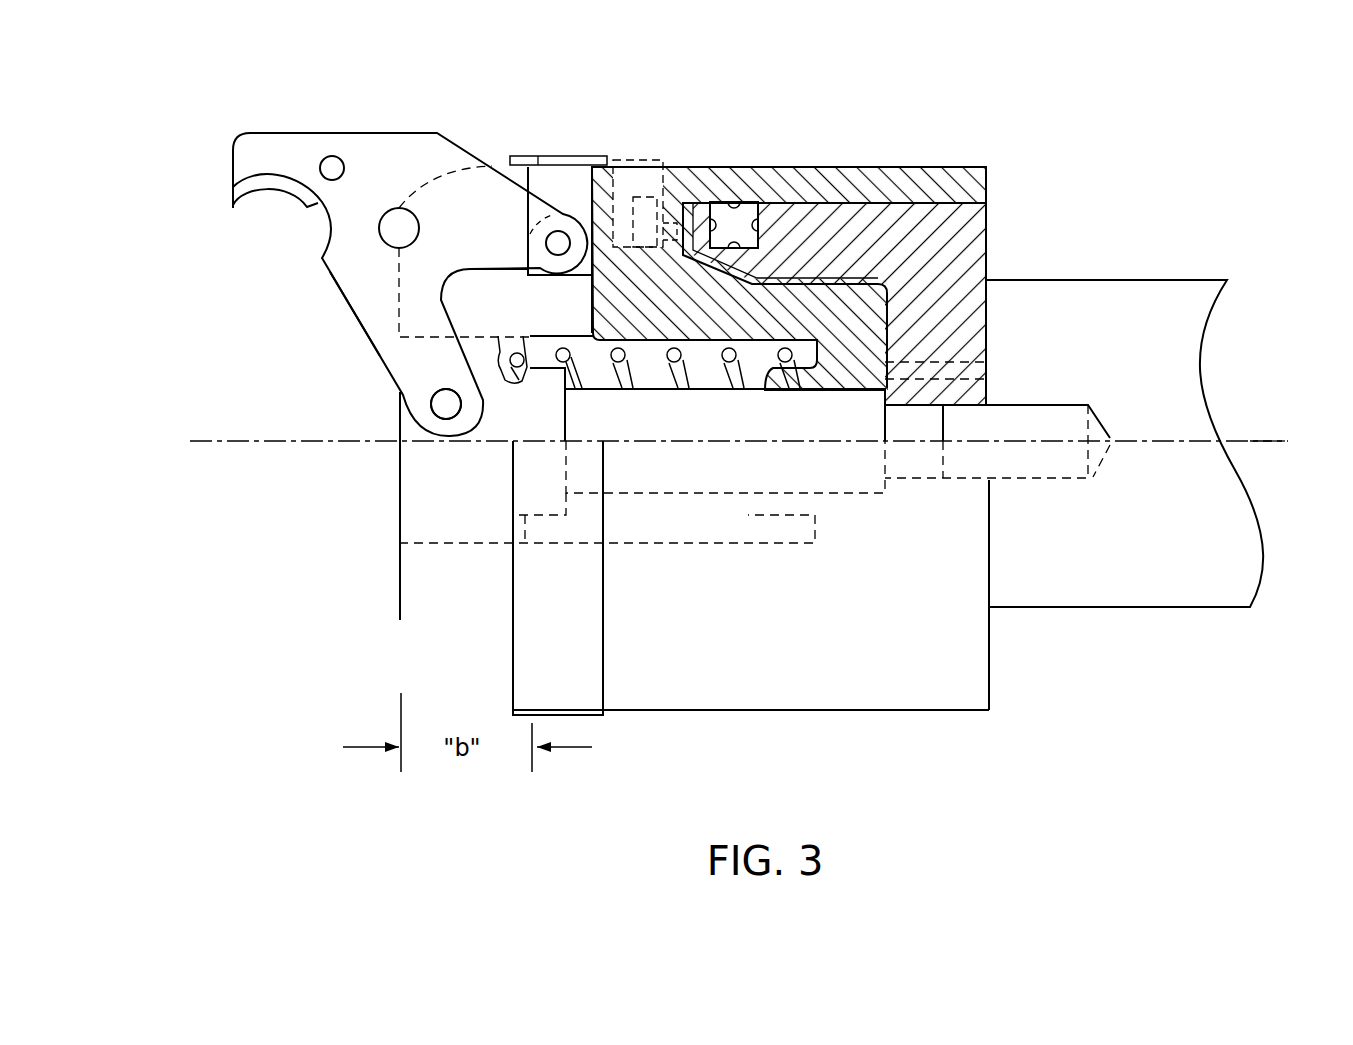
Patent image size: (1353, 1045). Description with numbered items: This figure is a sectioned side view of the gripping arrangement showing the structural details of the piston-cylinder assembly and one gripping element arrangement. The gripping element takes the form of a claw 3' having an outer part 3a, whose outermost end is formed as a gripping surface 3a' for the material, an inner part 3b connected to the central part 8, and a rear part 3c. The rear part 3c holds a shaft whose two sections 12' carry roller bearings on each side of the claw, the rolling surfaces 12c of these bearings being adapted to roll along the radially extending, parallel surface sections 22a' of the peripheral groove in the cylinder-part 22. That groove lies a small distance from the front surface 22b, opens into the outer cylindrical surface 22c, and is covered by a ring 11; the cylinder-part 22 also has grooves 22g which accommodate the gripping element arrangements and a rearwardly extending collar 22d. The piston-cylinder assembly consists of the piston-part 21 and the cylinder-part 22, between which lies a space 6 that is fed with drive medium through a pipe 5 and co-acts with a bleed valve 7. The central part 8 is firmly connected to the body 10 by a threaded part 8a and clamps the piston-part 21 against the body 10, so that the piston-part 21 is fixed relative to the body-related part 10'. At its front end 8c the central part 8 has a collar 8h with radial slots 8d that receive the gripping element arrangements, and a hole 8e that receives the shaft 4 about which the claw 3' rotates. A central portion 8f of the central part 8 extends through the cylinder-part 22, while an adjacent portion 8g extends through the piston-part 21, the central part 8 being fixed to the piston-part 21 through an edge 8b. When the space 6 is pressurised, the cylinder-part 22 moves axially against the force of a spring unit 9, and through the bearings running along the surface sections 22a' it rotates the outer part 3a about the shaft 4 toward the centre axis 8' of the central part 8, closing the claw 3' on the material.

The outer part 3a is at (410, 258).
The gripping surface 3a' is at (242, 185).
The claw 3' is at (454, 244).
The rear part 3c is at (520, 222).
The shaft sections 12' is at (517, 247).
The inner part 3b is at (400, 378).
The shaft 4 is at (432, 428).
The hole 8e is at (445, 420).
The cylinder-part 22 is at (796, 167).
The outer cylindrical surface 22c is at (686, 167).
The collar 22d is at (970, 167).
The surface sections 22a' is at (590, 143).
The piston-part 21 is at (985, 236).
The space 6 is at (848, 280).
The bleed valve 7 is at (651, 160).
The ring 11 is at (530, 156).
The rolling surfaces 12c is at (560, 246).
The grooves 22g is at (478, 311).
The front surface 22b is at (398, 603).
The central part 8 is at (691, 388).
The slots 8d is at (499, 426).
The central portion 8f is at (774, 431).
The spring unit 9 is at (672, 365).
The edge 8b is at (883, 495).
The collar 8h is at (425, 533).
The end 8c is at (399, 518).
The threaded part 8a is at (1070, 405).
The adjacent portion 8g is at (945, 455).
The pipe 5 is at (986, 378).
The centre axis 8' is at (738, 410).
The body-related part 10' is at (1295, 433).
The body 10 is at (1124, 495).